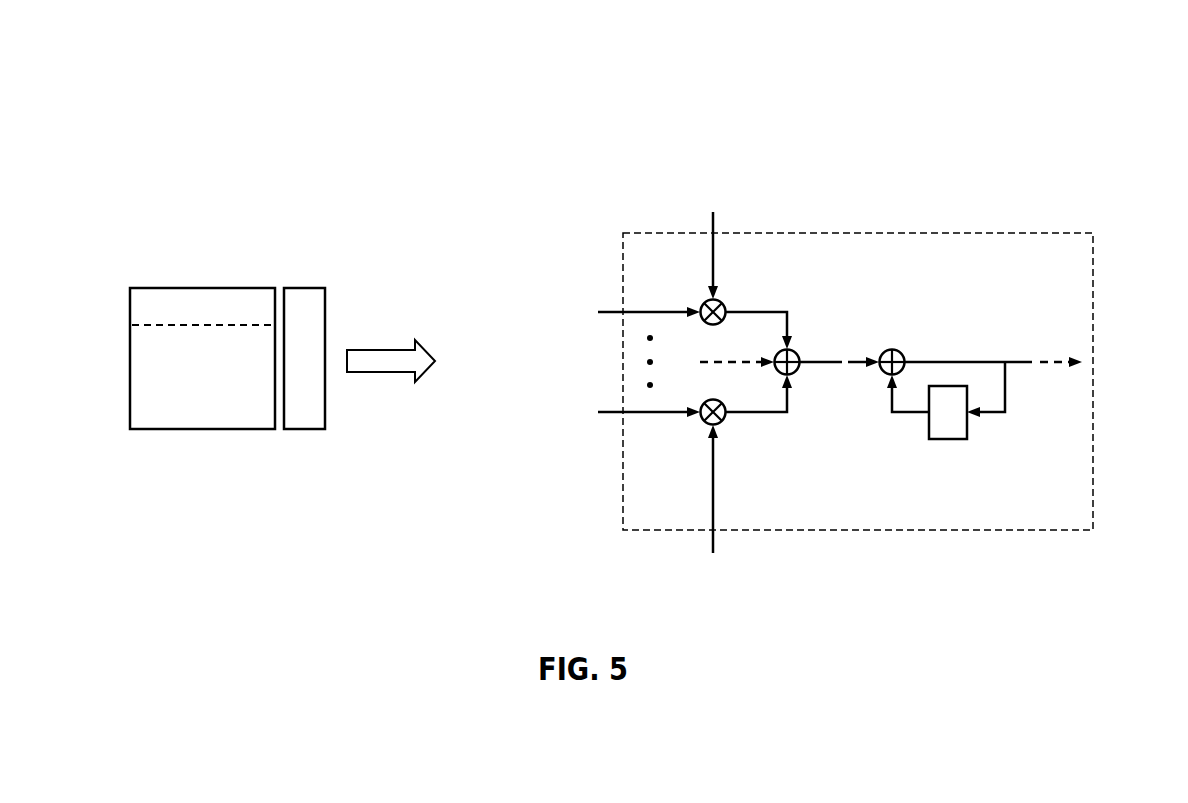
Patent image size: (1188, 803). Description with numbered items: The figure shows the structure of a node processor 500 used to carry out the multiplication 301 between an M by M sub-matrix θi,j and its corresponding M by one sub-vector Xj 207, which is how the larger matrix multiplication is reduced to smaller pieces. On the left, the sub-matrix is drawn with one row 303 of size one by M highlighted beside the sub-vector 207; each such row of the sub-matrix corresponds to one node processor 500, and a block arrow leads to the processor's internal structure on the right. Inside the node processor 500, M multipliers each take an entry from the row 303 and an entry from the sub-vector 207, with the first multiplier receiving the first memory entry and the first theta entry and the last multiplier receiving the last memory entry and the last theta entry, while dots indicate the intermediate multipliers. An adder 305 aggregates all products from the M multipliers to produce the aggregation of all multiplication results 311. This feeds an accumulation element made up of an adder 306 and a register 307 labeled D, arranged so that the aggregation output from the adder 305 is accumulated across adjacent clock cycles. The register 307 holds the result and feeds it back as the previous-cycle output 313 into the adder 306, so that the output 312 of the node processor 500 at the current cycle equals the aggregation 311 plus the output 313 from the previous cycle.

The node processor 500 is at (304, 92).
The multiplication between sub-matrix and sub-vector 301 is at (217, 498).
The row of the sub-matrix 303 is at (203, 288).
The sub-vector Xj 207 is at (305, 288).
The adder 305 is at (800, 358).
The adder of accumulation element 306 is at (895, 350).
The aggregation of all multiplication results 311 is at (817, 364).
The output of the node processor 312 is at (1030, 362).
The register 307 is at (967, 427).
The output from the previous cycle 313 is at (890, 412).